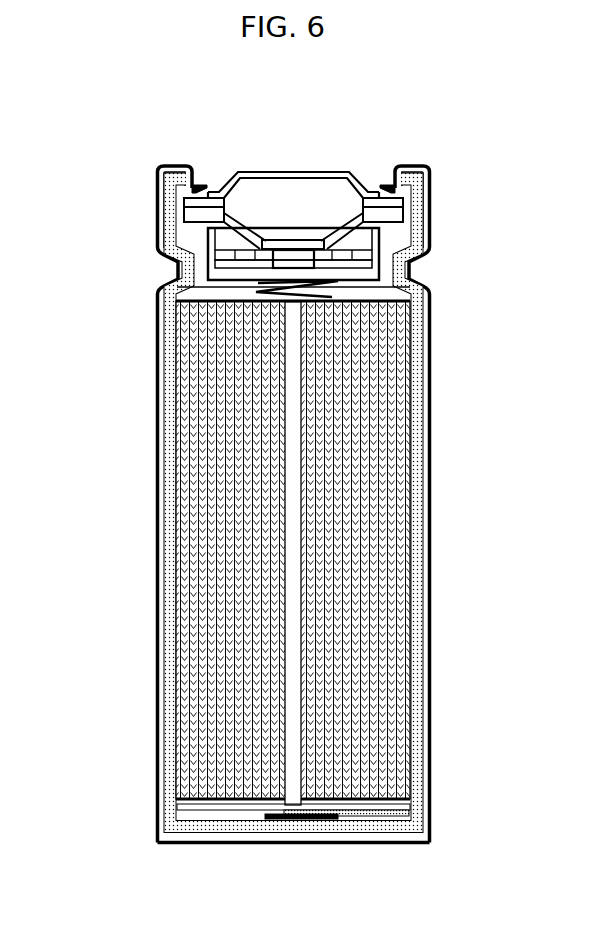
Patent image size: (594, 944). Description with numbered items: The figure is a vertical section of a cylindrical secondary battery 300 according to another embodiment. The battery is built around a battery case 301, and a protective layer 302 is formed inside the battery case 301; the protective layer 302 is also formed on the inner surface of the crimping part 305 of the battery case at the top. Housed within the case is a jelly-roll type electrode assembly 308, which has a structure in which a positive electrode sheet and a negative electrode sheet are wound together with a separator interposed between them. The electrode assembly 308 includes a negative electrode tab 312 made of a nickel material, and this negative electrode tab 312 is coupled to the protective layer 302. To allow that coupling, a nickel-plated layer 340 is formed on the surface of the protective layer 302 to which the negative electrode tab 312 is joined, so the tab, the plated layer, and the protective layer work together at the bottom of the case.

The cylindrical secondary battery 300 is at (100, 132).
The battery case 301 is at (430, 415).
The protective layer 302 is at (415, 518).
The crimping part 305 is at (415, 163).
The jelly-roll type electrode assembly 308 is at (395, 643).
The negative electrode tab 312 is at (393, 815).
The nickel-plated layer 340 is at (330, 813).